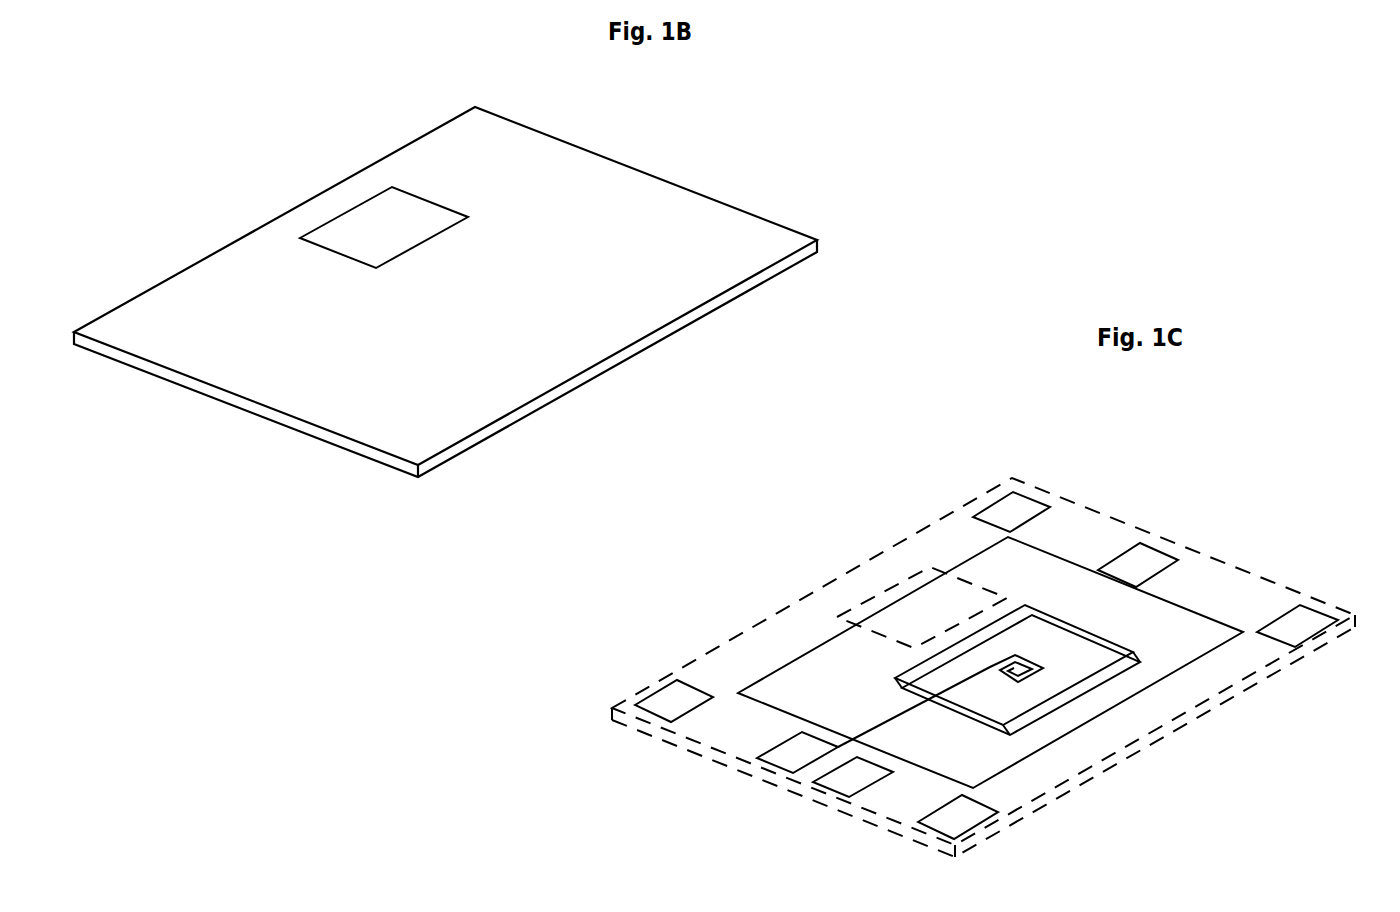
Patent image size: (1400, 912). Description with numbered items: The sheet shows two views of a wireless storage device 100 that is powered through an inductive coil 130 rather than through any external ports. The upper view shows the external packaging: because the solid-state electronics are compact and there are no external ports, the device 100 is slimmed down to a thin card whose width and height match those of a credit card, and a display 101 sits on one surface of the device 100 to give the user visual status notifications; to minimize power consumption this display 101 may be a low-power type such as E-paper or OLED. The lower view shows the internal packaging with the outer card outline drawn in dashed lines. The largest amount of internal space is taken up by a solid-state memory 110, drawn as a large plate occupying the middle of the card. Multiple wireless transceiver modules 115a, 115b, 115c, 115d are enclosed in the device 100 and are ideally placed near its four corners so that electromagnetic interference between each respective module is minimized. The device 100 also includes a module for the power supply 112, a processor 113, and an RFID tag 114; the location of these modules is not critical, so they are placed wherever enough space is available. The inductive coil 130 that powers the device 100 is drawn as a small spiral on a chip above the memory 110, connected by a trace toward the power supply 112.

In FIG. 1B, the wireless storage device 100 is at (617, 168).
In FIG. 1B, the display 101 is at (380, 243).
In FIG. 1C, the solid-state memory 110 is at (862, 660).
In FIG. 1C, the power supply 112 is at (788, 750).
In FIG. 1C, the processor 113 is at (852, 780).
In FIG. 1C, the RFID tag 114 is at (1128, 560).
In FIG. 1C, the wireless transceiver module 115a is at (668, 700).
In FIG. 1C, the wireless transceiver module 115b is at (943, 818).
In FIG. 1C, the wireless transceiver module 115c is at (1032, 505).
In FIG. 1C, the wireless transceiver module 115d is at (1302, 618).
In FIG. 1C, the inductive coil 130 is at (1043, 670).